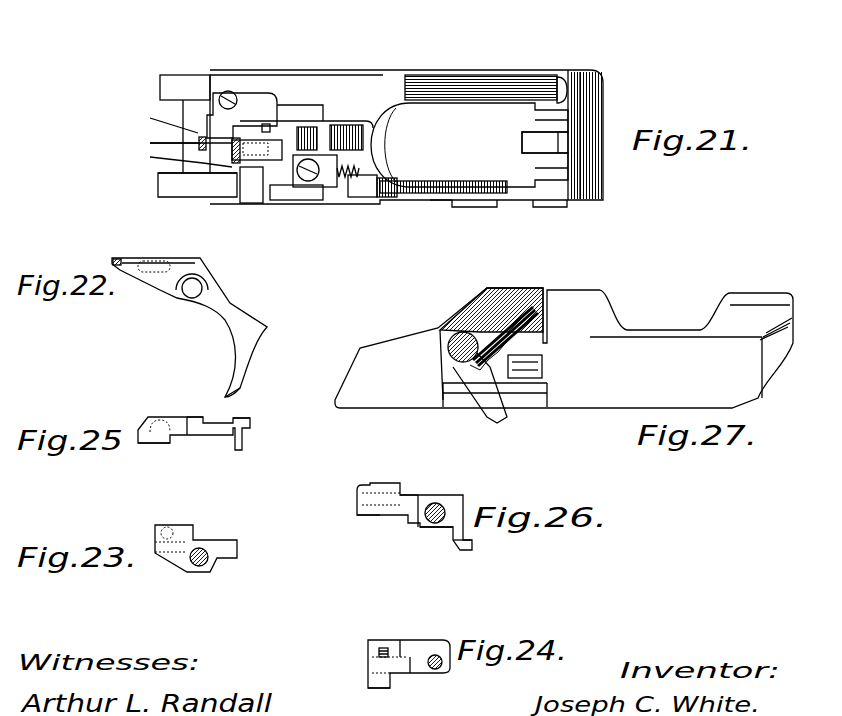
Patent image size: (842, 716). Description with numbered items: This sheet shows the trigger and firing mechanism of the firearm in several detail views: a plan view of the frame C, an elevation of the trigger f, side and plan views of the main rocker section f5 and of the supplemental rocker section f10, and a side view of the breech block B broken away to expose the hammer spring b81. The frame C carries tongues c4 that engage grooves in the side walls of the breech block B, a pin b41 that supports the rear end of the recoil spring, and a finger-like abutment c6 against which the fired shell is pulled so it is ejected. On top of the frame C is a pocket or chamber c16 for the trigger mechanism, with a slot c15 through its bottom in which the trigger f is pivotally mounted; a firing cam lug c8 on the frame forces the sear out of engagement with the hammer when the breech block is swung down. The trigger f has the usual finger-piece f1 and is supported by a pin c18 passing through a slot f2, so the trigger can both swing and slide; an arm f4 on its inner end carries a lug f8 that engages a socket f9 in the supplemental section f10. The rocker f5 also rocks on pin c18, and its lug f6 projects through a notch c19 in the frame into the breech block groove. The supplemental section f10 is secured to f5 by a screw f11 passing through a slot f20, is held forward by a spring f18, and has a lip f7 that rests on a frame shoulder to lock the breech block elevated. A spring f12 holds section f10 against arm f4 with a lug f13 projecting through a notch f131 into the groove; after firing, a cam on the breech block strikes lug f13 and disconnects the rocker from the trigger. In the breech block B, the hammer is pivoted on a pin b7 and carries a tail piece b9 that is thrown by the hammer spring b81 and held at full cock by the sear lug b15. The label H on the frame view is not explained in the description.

In FIG. 21, the tongue c4 is at (172, 76).
In FIG. 21, the hammer H is at (225, 95).
In FIG. 21, the pocket or chamber c16 is at (247, 94).
In FIG. 21, the slot c15 is at (266, 124).
In FIG. 21, the screw f11 is at (312, 165).
In FIG. 26, the screw f11 is at (432, 503).
In FIG. 24, the screw f11 is at (436, 656).
In FIG. 21, the frame C is at (383, 92).
In FIG. 21, the pin b41 is at (513, 85).
In FIG. 21, the finger like abutment c6 is at (527, 142).
In FIG. 21, the spring f18 is at (392, 140).
In FIG. 21, the arm f4 is at (198, 140).
In FIG. 22, the arm f4 is at (118, 258).
In FIG. 21, the lip f7 is at (200, 150).
In FIG. 25, the lip f7 is at (141, 444).
In FIG. 26, the lip f7 is at (357, 517).
In FIG. 21, the spring f12 is at (200, 157).
In FIG. 23, the spring f12 is at (185, 508).
In FIG. 24, the spring f12 is at (380, 652).
In FIG. 21, the notch c19 is at (237, 184).
In FIG. 21, the lug f6 is at (251, 204).
In FIG. 24, the lug f6 is at (372, 687).
In FIG. 21, the rocker f5 is at (278, 180).
In FIG. 23, the rocker f5 is at (237, 552).
In FIG. 24, the rocker f5 is at (406, 641).
In FIG. 21, the lug f13 is at (333, 202).
In FIG. 25, the lug f13 is at (250, 426).
In FIG. 26, the lug f13 is at (468, 550).
In FIG. 21, the notch f131 is at (420, 234).
In FIG. 21, the lug c8 is at (430, 215).
In FIG. 21, the lug f8 is at (248, 150).
In FIG. 22, the lug f8 is at (157, 273).
In FIG. 22, the slot f2 is at (190, 296).
In FIG. 22, the trigger f is at (205, 292).
In FIG. 22, the finger-piece f1 is at (243, 372).
In FIG. 25, the socket f9 is at (153, 417).
In FIG. 26, the socket f9 is at (407, 486).
In FIG. 21, the supplemental rocker section f10 is at (309, 160).
In FIG. 25, the supplemental rocker section f10 is at (200, 394).
In FIG. 26, the supplemental rocker section f10 is at (452, 472).
In FIG. 23, the pin c18 is at (203, 566).
In FIG. 27, the hammer spring b81 is at (518, 262).
In FIG. 27, the pin b7 is at (450, 352).
In FIG. 27, the lug b15 is at (542, 360).
In FIG. 27, the tail piece b9 is at (504, 410).
In FIG. 27, the breech block B is at (564, 348).
In FIG. 26, the slot f20 is at (428, 523).